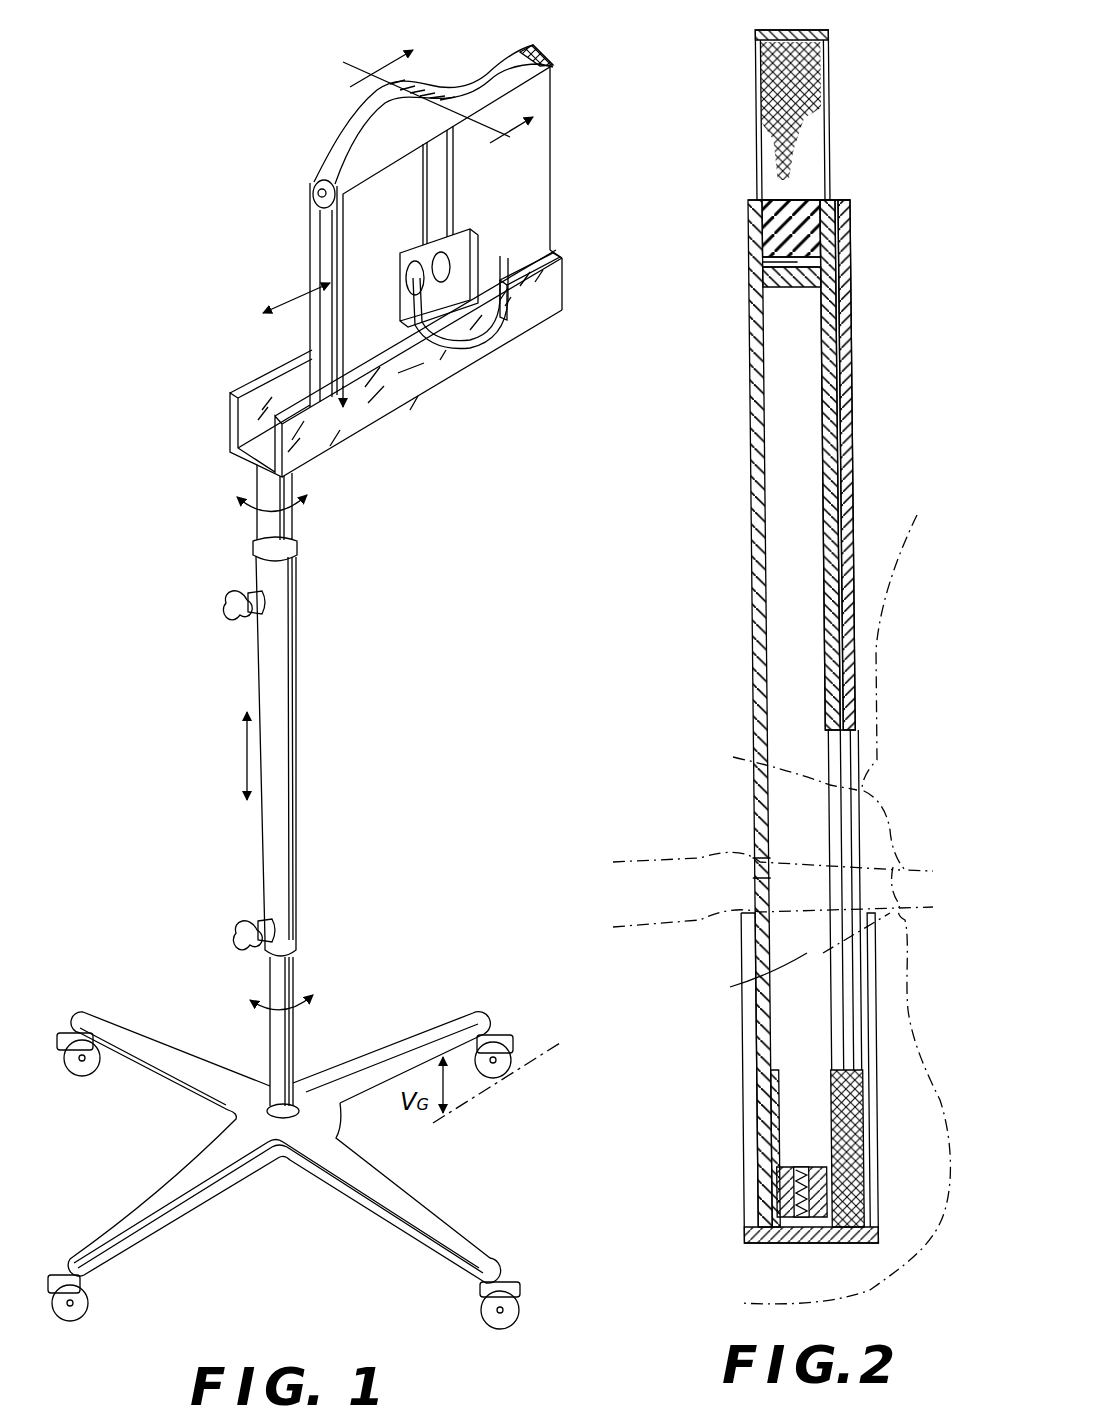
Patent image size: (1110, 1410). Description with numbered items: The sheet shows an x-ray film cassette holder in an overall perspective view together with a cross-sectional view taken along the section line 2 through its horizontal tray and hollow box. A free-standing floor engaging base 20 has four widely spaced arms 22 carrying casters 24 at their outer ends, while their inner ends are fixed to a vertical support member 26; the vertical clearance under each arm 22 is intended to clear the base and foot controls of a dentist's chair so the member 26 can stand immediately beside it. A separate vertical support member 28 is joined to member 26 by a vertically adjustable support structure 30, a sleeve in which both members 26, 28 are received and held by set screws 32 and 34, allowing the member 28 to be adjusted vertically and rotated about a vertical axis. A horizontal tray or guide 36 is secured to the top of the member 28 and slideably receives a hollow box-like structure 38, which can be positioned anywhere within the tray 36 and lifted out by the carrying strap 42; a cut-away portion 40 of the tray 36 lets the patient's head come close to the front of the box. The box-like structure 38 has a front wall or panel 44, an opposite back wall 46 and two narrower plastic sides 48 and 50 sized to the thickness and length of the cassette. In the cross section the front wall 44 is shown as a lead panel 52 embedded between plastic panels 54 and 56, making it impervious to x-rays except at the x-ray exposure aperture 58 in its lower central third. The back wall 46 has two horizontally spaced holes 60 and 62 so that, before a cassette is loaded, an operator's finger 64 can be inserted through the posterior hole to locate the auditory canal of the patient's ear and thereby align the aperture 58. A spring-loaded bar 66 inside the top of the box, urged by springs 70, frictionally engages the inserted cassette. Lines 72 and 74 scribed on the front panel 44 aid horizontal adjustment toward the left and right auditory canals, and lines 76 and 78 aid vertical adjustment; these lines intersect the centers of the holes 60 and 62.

In FIG. 1, the section line 2- 2 is at (442, 89).
In FIG. 1, the free-standing floor engaging base 20 is at (357, 1033).
In FIG. 1, the arms 22 is at (162, 1050).
In FIG. 1, the casters 24 is at (60, 1036).
In FIG. 1, the vertical support member 26 is at (300, 1041).
In FIG. 1, the vertical support member 28 is at (296, 521).
In FIG. 1, the vertically adjustable support structure 30 is at (296, 760).
In FIG. 1, the set screw 32 is at (222, 600).
In FIG. 1, the set screw 34 is at (232, 932).
In FIG. 1, the horizontal tray 36 is at (230, 394).
In FIG. 2, the horizontal tray 36 is at (777, 1243).
In FIG. 1, the hollow box-like structure 38 is at (558, 78).
In FIG. 2, the hollow box-like structure 38 is at (740, 193).
In FIG. 1, the cut-away portion 40 is at (500, 318).
In FIG. 2, the cut-away portion 40 is at (758, 1100).
In FIG. 1, the carrying strap 42 is at (367, 102).
In FIG. 2, the carrying strap 42 is at (808, 86).
In FIG. 1, the front wall 44 is at (537, 183).
In FIG. 2, the front wall 44 is at (826, 200).
In FIG. 1, the back wall 46 is at (310, 263).
In FIG. 2, the back wall 46 is at (762, 590).
In FIG. 1, the side wall 48 is at (380, 130).
In FIG. 2, the side wall 48 is at (793, 197).
In FIG. 2, the side wall 50 is at (777, 1197).
In FIG. 2, the lead panel 52 is at (850, 327).
In FIG. 2, the plastic panel 54 is at (854, 447).
In FIG. 2, the plastic panel 56 is at (828, 390).
In FIG. 1, the x-ray exposure aperture 58 is at (443, 305).
In FIG. 2, the x-ray exposure aperture 58 is at (843, 753).
In FIG. 1, the hole 60 is at (417, 253).
In FIG. 2, the hole 60 is at (757, 873).
In FIG. 1, the hole 62 is at (453, 250).
In FIG. 2, the operator's finger 64 is at (663, 832).
In FIG. 2, the spring-loaded bar 66 is at (822, 264).
In FIG. 2, the springs 70 is at (762, 262).
In FIG. 1, the line 72 is at (423, 180).
In FIG. 1, the line 74 is at (453, 177).
In FIG. 1, the line 76 is at (370, 320).
In FIG. 1, the line 78 is at (537, 220).